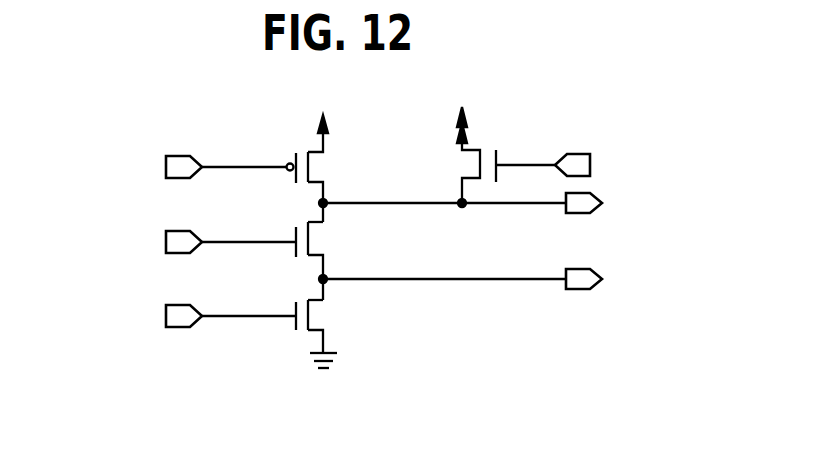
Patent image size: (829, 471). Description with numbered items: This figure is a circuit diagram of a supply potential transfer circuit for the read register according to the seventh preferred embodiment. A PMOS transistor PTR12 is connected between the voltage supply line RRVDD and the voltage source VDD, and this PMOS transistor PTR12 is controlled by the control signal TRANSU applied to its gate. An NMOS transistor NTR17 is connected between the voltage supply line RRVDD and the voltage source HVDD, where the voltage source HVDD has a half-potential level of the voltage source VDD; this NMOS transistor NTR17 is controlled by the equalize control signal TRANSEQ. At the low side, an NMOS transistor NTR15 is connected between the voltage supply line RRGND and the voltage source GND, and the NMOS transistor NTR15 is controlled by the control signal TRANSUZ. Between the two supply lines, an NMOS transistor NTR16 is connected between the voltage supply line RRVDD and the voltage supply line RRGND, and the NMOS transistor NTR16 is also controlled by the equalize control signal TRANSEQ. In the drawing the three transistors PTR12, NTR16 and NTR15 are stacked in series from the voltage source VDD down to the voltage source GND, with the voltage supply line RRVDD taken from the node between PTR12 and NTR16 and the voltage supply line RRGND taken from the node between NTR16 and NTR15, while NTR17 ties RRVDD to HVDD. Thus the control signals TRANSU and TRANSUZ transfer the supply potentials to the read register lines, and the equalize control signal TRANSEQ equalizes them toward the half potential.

The PMOS transistor PTR12 is at (306, 168).
The NMOS transistor NTR16 is at (309, 255).
The NMOS transistor NTR15 is at (309, 319).
The NMOS transistor NTR17 is at (459, 155).
The control signal TRANSU is at (121, 169).
The equalize control signal TRANSEQ is at (378, 205).
The control signal TRANSUZ is at (113, 319).
The voltage supply line RRVDD is at (635, 204).
The voltage supply line RRGND is at (638, 277).
The voltage source VDD is at (326, 96).
The voltage source HVDD is at (492, 87).
The voltage source GND is at (353, 371).